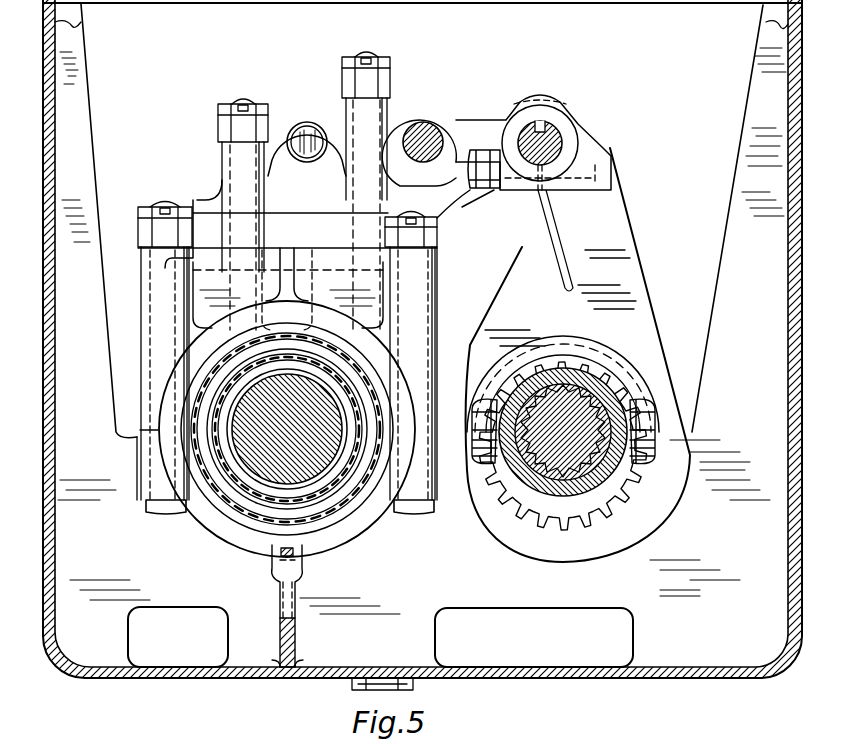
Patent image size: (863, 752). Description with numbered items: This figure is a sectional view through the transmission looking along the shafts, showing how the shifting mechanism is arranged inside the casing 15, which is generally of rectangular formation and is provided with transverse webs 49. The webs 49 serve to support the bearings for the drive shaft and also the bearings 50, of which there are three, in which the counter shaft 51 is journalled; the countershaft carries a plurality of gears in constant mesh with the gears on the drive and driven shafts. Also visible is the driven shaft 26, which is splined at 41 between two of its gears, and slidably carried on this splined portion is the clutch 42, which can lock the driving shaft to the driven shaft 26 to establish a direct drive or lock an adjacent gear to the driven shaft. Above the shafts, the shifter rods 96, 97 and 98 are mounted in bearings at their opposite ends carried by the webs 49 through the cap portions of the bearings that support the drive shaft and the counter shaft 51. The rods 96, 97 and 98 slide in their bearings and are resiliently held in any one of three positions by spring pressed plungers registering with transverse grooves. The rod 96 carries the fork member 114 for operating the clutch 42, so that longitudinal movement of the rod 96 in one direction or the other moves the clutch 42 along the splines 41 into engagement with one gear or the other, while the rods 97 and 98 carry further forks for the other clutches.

The casing 15 is at (422, 345).
The driven shaft 26 is at (578, 437).
The splines 41 is at (620, 486).
The clutch 42 is at (530, 484).
The transverse webs 49 is at (593, 355).
The bearings 50 is at (266, 514).
The counter shaft 51 is at (272, 458).
The shifter rod 96 is at (551, 134).
The shifter rod 97 is at (424, 128).
The shifter rod 98 is at (306, 138).
The fork member 114 is at (636, 358).